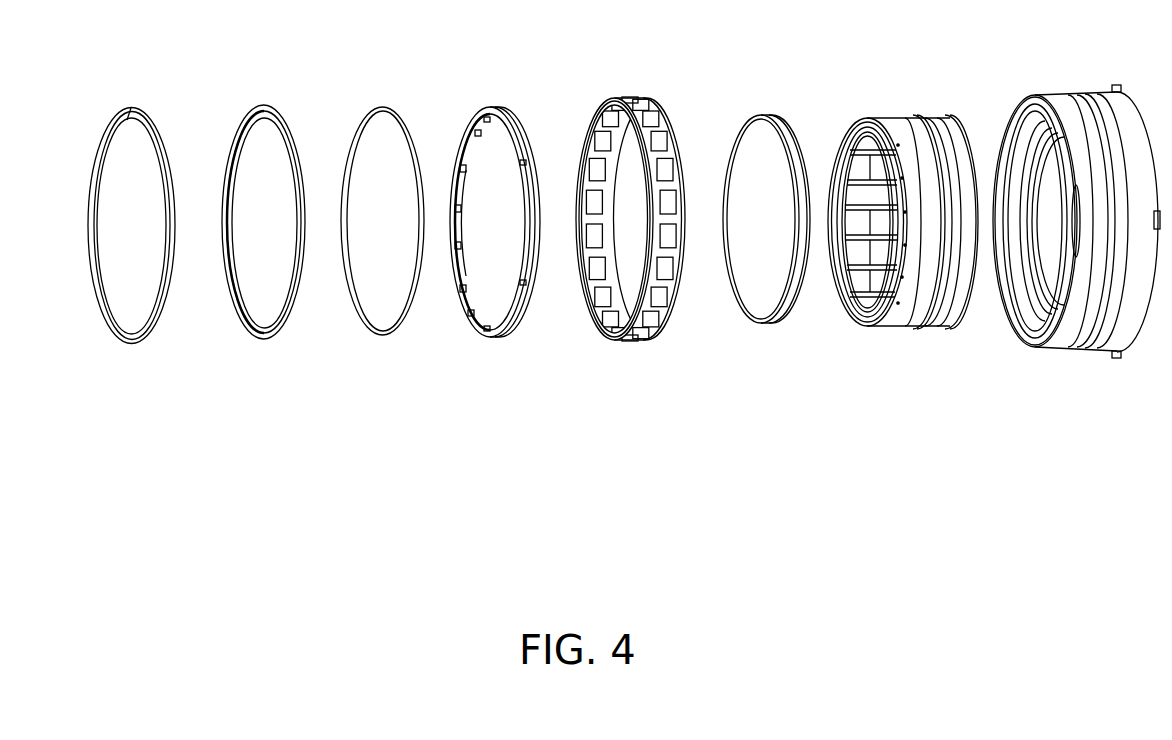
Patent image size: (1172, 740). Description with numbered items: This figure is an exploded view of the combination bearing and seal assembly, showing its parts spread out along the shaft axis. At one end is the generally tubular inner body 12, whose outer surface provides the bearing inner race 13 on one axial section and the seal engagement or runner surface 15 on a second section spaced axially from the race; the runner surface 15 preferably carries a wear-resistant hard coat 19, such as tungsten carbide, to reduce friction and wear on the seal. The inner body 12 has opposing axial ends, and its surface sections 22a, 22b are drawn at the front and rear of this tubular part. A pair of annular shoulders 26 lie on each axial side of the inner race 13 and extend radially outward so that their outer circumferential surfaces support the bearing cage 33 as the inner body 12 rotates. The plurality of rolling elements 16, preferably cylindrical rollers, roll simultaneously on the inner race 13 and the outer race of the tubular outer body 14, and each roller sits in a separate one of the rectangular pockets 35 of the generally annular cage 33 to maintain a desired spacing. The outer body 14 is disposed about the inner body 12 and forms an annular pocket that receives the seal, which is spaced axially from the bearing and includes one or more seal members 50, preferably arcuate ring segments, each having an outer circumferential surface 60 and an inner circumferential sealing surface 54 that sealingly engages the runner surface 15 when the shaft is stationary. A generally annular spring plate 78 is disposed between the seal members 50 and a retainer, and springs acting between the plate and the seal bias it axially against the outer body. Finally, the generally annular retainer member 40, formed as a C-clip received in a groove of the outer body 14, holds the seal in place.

The tubular inner body 12 is at (922, 241).
The bearing inner race 13 is at (942, 318).
The tubular outer body 14 is at (1088, 375).
The seal engagement or runner surface 15 is at (888, 325).
The rolling elements 16 is at (641, 100).
The wear-resistant hard coat 19 is at (776, 122).
The outer ring flange 22a is at (948, 166).
The front ring flange 22b is at (890, 124).
The annular shoulders 26 is at (914, 120).
The bearing cage 33 is at (653, 188).
The rectangular pockets 35 is at (666, 146).
The retainer member 40 is at (130, 352).
The seal members 50 is at (495, 265).
The sealing surface 54 is at (468, 270).
The outer circumferential surface 60 is at (379, 340).
The spring plate 78 is at (264, 345).